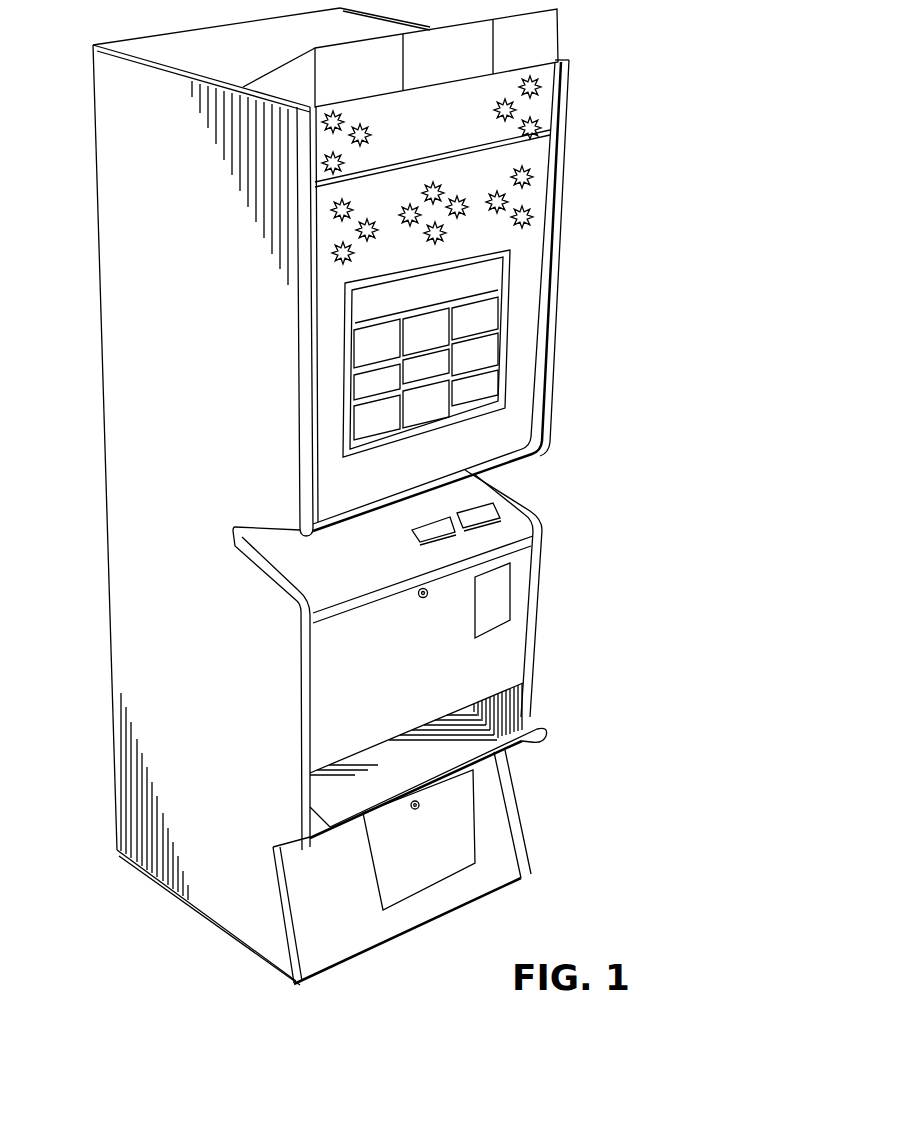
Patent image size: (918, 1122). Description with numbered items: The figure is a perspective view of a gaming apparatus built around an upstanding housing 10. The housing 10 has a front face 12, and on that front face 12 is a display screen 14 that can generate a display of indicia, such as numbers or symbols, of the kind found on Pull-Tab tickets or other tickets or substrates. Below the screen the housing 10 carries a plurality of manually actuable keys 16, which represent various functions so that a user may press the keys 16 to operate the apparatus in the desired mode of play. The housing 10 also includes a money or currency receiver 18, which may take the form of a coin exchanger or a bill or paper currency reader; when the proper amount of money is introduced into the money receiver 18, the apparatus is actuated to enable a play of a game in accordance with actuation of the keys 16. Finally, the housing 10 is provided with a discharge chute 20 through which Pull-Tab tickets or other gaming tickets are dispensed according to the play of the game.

The housing 10 is at (123, 275).
The front face 12 is at (542, 108).
The display screen 14 is at (510, 290).
The manually actuable keys 16 is at (485, 512).
The money receiver 18 is at (497, 596).
The discharge chute 20 is at (527, 712).